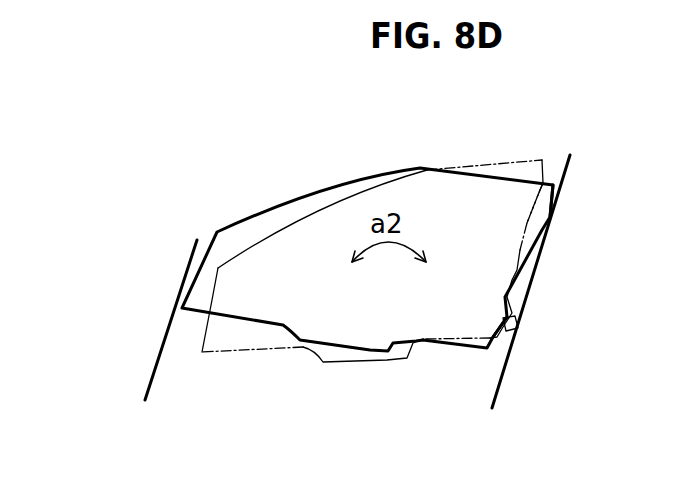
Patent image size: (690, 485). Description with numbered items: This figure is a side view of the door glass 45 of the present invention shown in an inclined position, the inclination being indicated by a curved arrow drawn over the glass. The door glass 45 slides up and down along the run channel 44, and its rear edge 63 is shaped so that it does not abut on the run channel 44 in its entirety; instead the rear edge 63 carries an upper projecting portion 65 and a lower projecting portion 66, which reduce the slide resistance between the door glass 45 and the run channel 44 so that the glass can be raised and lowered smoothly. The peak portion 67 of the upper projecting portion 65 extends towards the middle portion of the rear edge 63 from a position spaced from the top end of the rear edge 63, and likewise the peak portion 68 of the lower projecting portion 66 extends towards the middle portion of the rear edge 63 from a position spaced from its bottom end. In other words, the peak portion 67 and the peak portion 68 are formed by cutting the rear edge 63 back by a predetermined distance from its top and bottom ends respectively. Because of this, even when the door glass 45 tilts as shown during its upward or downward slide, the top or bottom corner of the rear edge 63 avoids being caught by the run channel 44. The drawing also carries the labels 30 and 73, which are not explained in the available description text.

The door window glass 30 is at (270, 171).
The door glass 45 is at (334, 172).
The run channel 44 is at (162, 307).
The rear edge 63 is at (526, 265).
The upper projecting portion 65 is at (560, 212).
The peak portion 67 is at (550, 220).
The lower projecting portion 66 is at (518, 325).
The peak portion 68 is at (517, 330).
The side member 73 is at (13, 202).